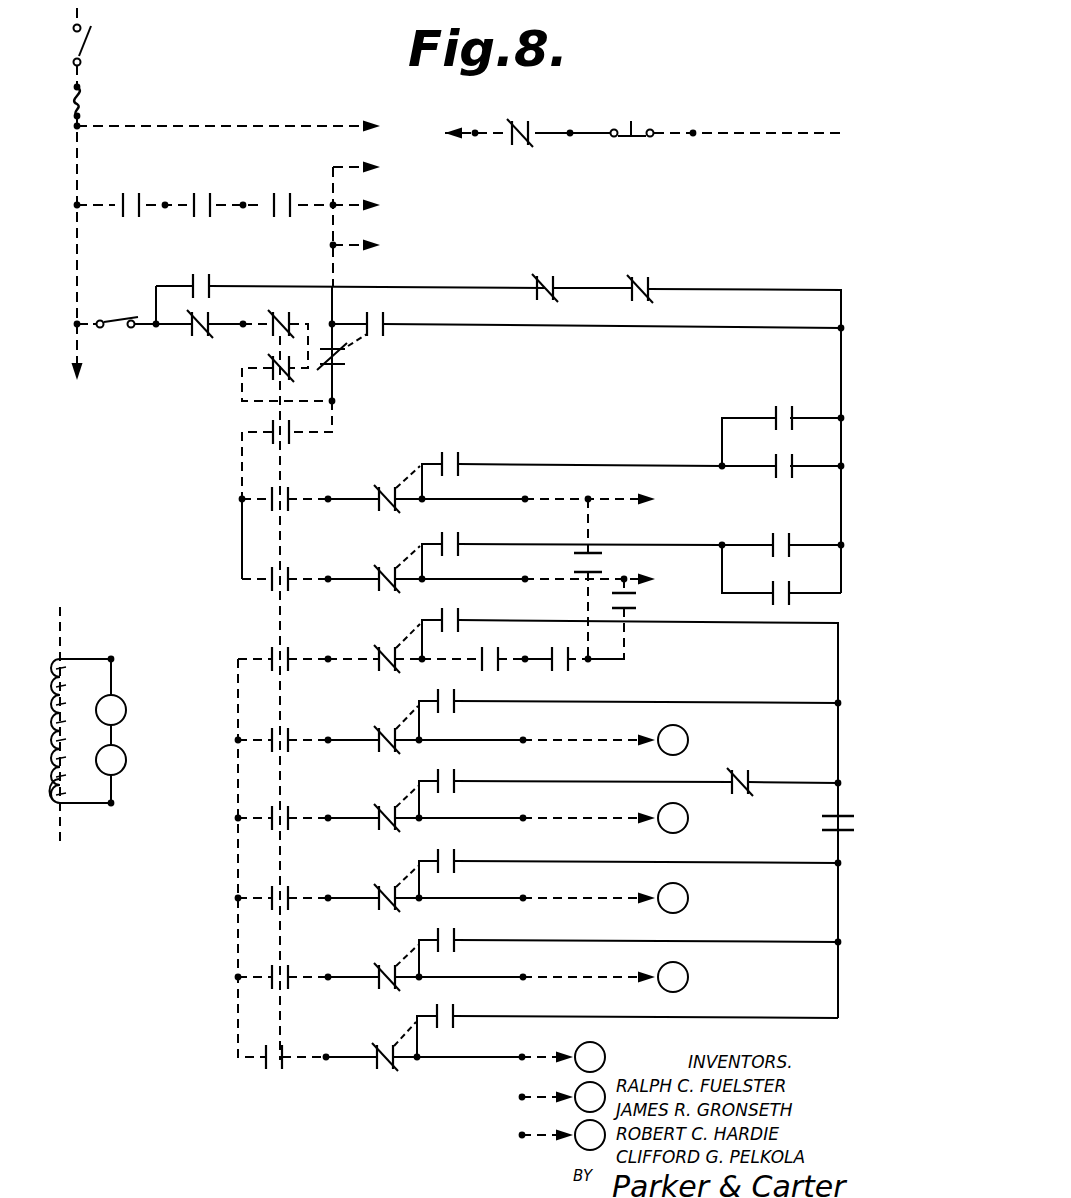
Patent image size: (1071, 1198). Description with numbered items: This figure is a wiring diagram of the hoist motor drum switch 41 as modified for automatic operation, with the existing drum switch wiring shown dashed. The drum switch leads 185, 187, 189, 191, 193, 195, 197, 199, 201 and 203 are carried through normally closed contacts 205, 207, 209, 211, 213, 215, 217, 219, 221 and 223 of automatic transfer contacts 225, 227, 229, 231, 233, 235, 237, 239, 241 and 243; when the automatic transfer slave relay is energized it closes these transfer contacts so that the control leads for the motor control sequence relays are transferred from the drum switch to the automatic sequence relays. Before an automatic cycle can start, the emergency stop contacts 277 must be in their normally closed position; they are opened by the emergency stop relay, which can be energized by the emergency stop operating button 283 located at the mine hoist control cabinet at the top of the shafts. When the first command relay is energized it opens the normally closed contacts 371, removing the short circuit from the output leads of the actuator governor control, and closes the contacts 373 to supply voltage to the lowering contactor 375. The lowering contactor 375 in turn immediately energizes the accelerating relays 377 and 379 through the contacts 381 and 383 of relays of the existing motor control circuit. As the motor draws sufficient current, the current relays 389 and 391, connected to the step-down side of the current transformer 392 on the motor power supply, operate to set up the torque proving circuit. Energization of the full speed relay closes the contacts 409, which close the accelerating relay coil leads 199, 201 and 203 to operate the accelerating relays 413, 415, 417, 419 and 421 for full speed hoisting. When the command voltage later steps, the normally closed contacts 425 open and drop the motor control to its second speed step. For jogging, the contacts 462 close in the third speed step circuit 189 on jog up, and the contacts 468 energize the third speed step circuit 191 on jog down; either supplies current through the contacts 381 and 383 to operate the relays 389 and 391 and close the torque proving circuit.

The drum switch 41 is at (225, 518).
The drum switch lead 185 is at (135, 333).
The drum switch lead 187 is at (242, 465).
The drum switch lead 189 is at (300, 512).
The drum switch lead 191 is at (300, 592).
The drum switch lead 193 is at (300, 672).
The drum switch lead 195 is at (300, 753).
The drum switch lead 197 is at (300, 831).
The accelerating relay coil lead 199 is at (300, 911).
The accelerating relay coil lead 201 is at (300, 990).
The accelerating relay coil lead 203 is at (318, 1068).
The normally closed contact 205 is at (208, 340).
The normally closed contact 207 is at (343, 356).
The normally closed contact 209 is at (396, 513).
The normally closed contact 211 is at (396, 593).
The normally closed contact 213 is at (396, 673).
The normally closed contact 215 is at (396, 754).
The normally closed contact 217 is at (396, 832).
The normally closed contact 219 is at (396, 912).
The normally closed contact 221 is at (396, 991).
The normally closed contact 223 is at (385, 1072).
The automatic transfer contact 225 is at (204, 272).
The automatic transfer contact 227 is at (378, 310).
The automatic transfer contact 229 is at (455, 450).
The automatic transfer contact 231 is at (455, 530).
The automatic transfer contact 233 is at (455, 607).
The automatic transfer contact 235 is at (452, 715).
The automatic transfer contact 237 is at (452, 769).
The automatic transfer contact 239 is at (452, 849).
The automatic transfer contact 241 is at (452, 928).
The automatic transfer contact 243 is at (450, 1004).
The emergency stop contacts 277 is at (516, 148).
The emergency stop operating button 283 is at (636, 145).
The normally closed contacts 371 is at (640, 275).
The contacts 373 is at (782, 532).
The lowering contactor 375 is at (636, 600).
The accelerating relay 377 is at (688, 738).
The accelerating relay 379 is at (688, 818).
The contacts 381 is at (493, 646).
The contacts 383 is at (558, 672).
The current relay 389 is at (126, 712).
The current relay 391 is at (126, 762).
The current transformer 392 is at (64, 663).
The contacts 409 is at (820, 826).
The accelerating relay 413 is at (688, 898).
The accelerating relay 415 is at (688, 979).
The accelerating relay 417 is at (603, 1048).
The accelerating relay 419 is at (577, 1104).
The accelerating relay 421 is at (578, 1145).
The normally closed contacts 425 is at (744, 766).
The contacts 462 is at (782, 405).
The contacts 468 is at (782, 580).